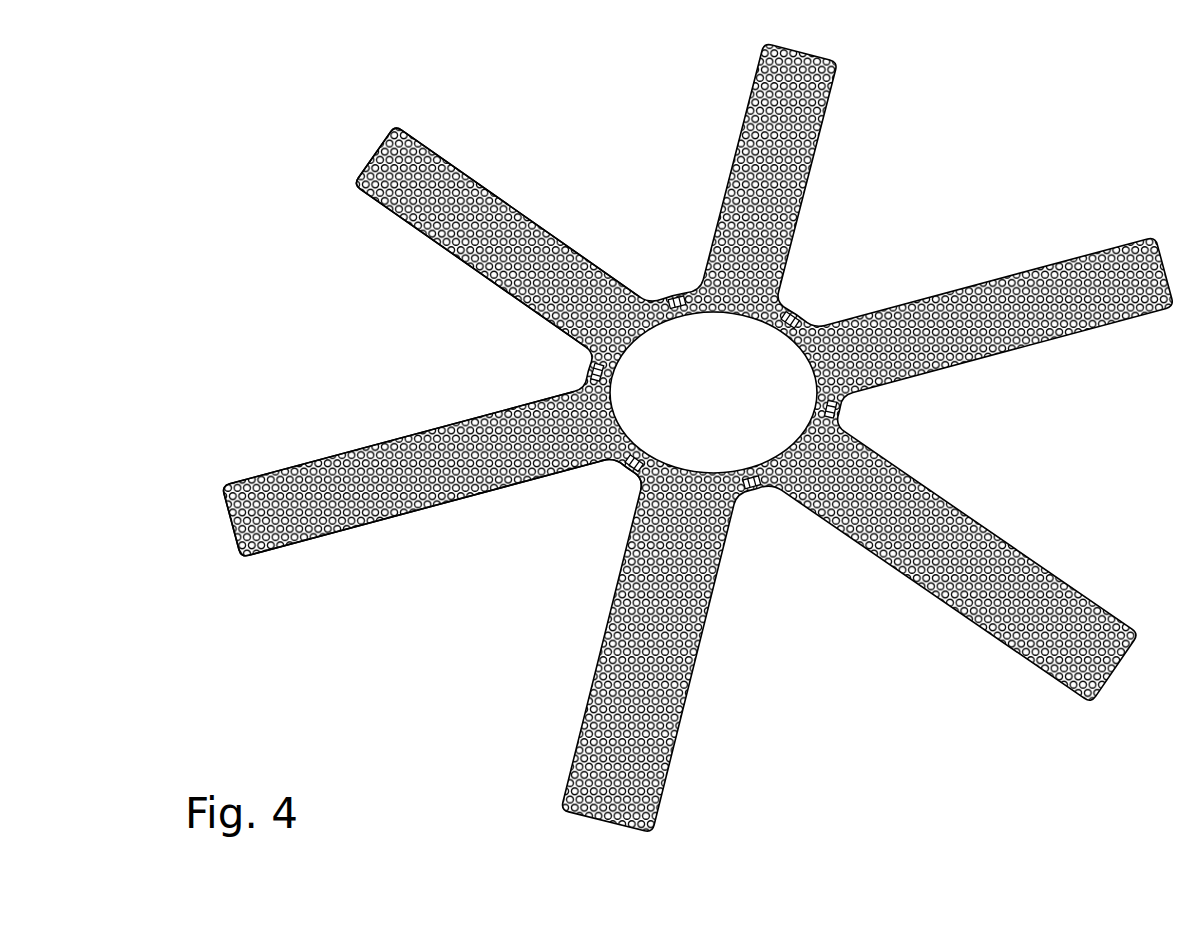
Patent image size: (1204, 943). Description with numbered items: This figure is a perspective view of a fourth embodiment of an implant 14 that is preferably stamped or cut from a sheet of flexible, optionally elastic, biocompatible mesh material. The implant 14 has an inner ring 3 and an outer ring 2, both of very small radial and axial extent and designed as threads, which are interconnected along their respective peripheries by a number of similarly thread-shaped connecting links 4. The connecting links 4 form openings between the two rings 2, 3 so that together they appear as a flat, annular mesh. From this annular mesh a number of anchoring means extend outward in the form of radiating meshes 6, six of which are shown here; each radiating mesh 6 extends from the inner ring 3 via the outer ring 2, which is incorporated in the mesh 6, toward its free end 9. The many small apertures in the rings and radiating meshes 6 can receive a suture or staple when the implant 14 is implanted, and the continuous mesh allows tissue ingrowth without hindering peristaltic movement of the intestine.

The implant 14 is at (935, 223).
The inner ring 3 is at (614, 414).
The radiating mesh 6 is at (350, 450).
The free end 9 is at (363, 160).
The outer ring 2 is at (627, 463).
The connecting link 4 is at (668, 298).